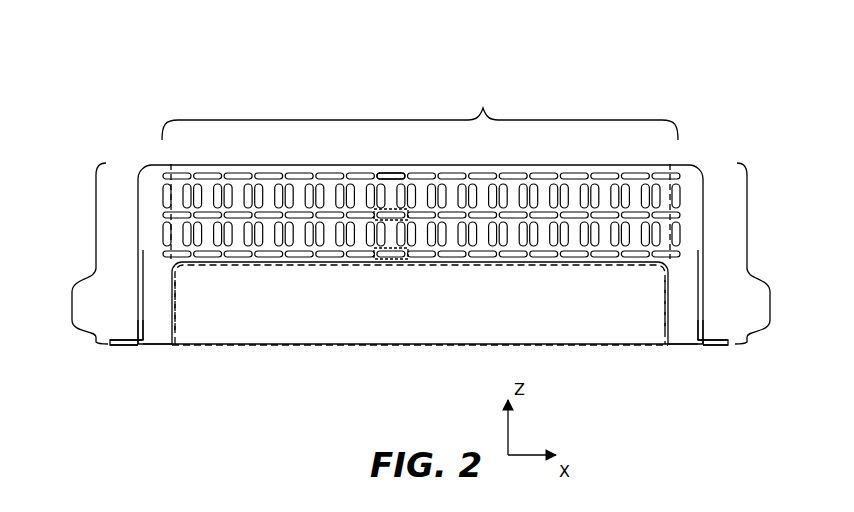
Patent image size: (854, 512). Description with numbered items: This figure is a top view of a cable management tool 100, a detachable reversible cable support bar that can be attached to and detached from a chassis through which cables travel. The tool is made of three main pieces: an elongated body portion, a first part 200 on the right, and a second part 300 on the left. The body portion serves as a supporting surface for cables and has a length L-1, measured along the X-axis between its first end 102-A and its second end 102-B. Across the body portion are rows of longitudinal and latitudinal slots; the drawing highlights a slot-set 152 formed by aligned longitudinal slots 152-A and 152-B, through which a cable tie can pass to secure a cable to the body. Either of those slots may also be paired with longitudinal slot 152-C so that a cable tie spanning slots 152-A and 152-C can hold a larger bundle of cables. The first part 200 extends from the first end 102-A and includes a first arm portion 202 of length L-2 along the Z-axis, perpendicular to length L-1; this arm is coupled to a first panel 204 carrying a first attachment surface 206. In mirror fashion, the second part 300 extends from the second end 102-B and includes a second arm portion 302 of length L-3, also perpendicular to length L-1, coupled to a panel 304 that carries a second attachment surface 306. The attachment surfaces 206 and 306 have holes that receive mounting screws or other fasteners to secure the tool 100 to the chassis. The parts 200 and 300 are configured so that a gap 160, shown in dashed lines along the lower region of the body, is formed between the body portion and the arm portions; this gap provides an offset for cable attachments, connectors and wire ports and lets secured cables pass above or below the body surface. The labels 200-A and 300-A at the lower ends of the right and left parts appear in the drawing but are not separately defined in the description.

The cable management tool 100 is at (118, 61).
The first end 102-A is at (679, 101).
The second end 102-B is at (164, 105).
The slot-set 152 is at (402, 219).
The longitudinal slot 152-A is at (393, 259).
The longitudinal slot 152-B is at (395, 209).
The longitudinal slot 152-C is at (392, 172).
The gap 160 is at (331, 345).
The first part 200 is at (696, 152).
The right end cap bottom 200-A is at (688, 346).
The first arm portion 202 is at (679, 294).
The first panel 204 is at (698, 312).
The first attachment surface 206 is at (718, 344).
The second part 300 is at (140, 155).
The left end cap bottom 300-A is at (148, 348).
The second arm portion 302 is at (162, 294).
The second panel 304 is at (143, 312).
The second attachment surface 306 is at (128, 344).
The length of body portion L-1 is at (483, 108).
The length of first arm portion L-2 is at (757, 256).
The length of second arm portion L-3 is at (82, 256).